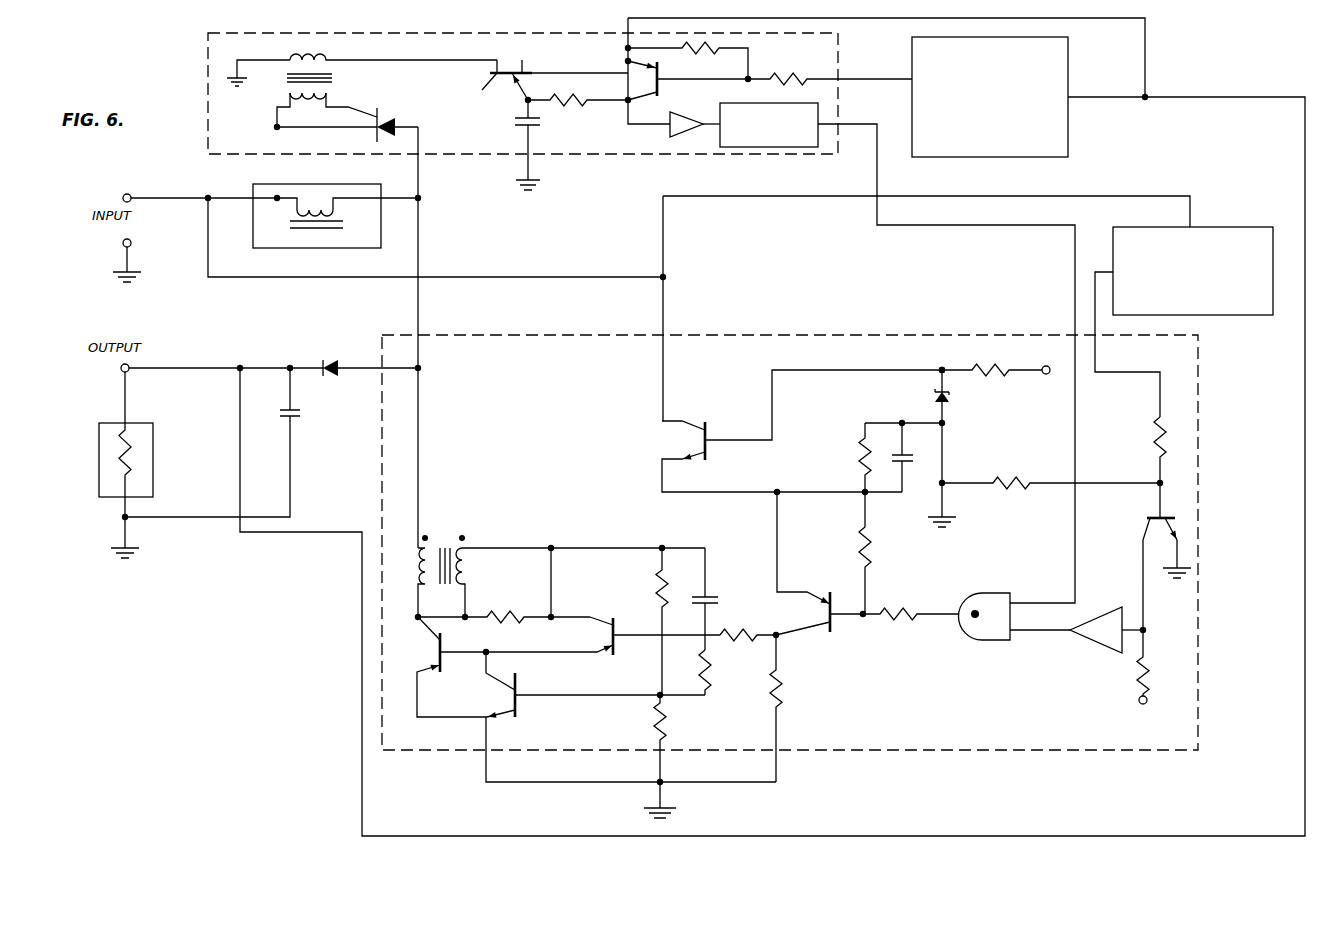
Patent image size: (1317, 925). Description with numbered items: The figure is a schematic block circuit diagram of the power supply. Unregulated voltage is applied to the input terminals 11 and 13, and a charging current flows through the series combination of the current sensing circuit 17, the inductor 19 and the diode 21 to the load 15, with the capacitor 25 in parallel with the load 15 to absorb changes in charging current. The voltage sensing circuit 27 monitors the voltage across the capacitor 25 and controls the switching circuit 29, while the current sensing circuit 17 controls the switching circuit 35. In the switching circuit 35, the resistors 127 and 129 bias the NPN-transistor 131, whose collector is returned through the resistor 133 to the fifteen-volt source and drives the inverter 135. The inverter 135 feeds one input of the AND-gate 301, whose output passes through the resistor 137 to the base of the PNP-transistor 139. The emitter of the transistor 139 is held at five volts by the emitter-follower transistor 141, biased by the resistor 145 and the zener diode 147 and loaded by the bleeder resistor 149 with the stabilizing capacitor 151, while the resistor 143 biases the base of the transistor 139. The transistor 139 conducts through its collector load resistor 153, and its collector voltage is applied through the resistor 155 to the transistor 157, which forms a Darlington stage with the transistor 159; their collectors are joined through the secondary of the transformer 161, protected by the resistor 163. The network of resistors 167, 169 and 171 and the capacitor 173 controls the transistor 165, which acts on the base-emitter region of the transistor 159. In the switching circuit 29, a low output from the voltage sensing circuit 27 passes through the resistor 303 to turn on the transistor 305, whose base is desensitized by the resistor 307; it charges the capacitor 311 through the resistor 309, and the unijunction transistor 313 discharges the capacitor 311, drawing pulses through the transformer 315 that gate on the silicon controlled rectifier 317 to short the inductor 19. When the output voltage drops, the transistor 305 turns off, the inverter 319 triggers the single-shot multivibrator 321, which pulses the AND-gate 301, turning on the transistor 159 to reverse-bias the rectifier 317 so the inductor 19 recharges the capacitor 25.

The input terminal 11 is at (130, 194).
The input terminal 13 is at (131, 242).
The load 15 is at (153, 437).
The current sensing circuit 17 is at (1240, 232).
The inductor 19 is at (298, 248).
The diode 21 is at (333, 362).
The capacitor 25 is at (301, 412).
The voltage sensing circuit 27 is at (1068, 57).
The switching circuit 29 is at (453, 33).
The switching circuit 35 is at (442, 750).
The resistor 127 is at (1152, 434).
The resistor 129 is at (1020, 478).
The NPN-transistor 131 is at (1180, 515).
The resistor 133 is at (1153, 670).
The inverter 135 is at (1105, 648).
The resistor 137 is at (897, 622).
The PNP-transistor 139 is at (835, 594).
The transistor 141 is at (707, 424).
The resistor 143 is at (868, 546).
The resistor 145 is at (1003, 367).
The zener diode 147 is at (950, 396).
The bleeder resistor 149 is at (857, 447).
The capacitor 151 is at (915, 456).
The collector load resistor 153 is at (782, 687).
The resistor 155 is at (740, 630).
The transistor 157 is at (600, 634).
The transistor 159 is at (453, 667).
The transformer 161 is at (447, 548).
The resistor 163 is at (505, 612).
The transistor 165 is at (518, 683).
The resistor 167 is at (652, 588).
The resistor 169 is at (672, 732).
The resistor 171 is at (712, 672).
The capacitor 173 is at (715, 595).
The AND-gate 301 is at (996, 597).
The resistor 303 is at (800, 74).
The transistor 305 is at (662, 68).
The resistor 307 is at (720, 47).
The resistor 309 is at (583, 92).
The capacitor 311 is at (511, 122).
The unijunction transistor 313 is at (547, 85).
The transformer 315 is at (335, 82).
The silicon controlled rectifier 317 is at (388, 124).
The inverter 319 is at (688, 112).
The single-shot multivibrator 321 is at (720, 136).